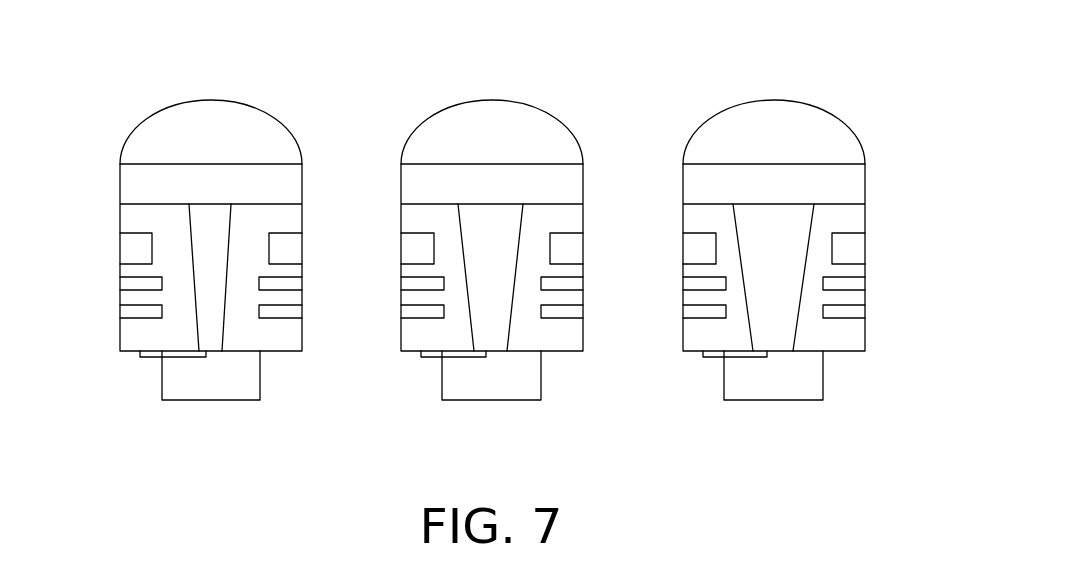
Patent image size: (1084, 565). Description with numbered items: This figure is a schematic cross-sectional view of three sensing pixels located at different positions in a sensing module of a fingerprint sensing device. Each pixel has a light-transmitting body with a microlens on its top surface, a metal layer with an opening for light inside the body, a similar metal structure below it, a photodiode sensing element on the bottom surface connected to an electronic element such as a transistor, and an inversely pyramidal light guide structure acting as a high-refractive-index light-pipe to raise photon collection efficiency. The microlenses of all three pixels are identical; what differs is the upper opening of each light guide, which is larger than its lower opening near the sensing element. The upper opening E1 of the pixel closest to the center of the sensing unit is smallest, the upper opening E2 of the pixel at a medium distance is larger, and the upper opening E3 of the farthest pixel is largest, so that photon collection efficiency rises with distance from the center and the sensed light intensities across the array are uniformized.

The upper opening E1 is at (220, 199).
The upper opening E2 is at (534, 186).
The upper opening E3 is at (815, 186).